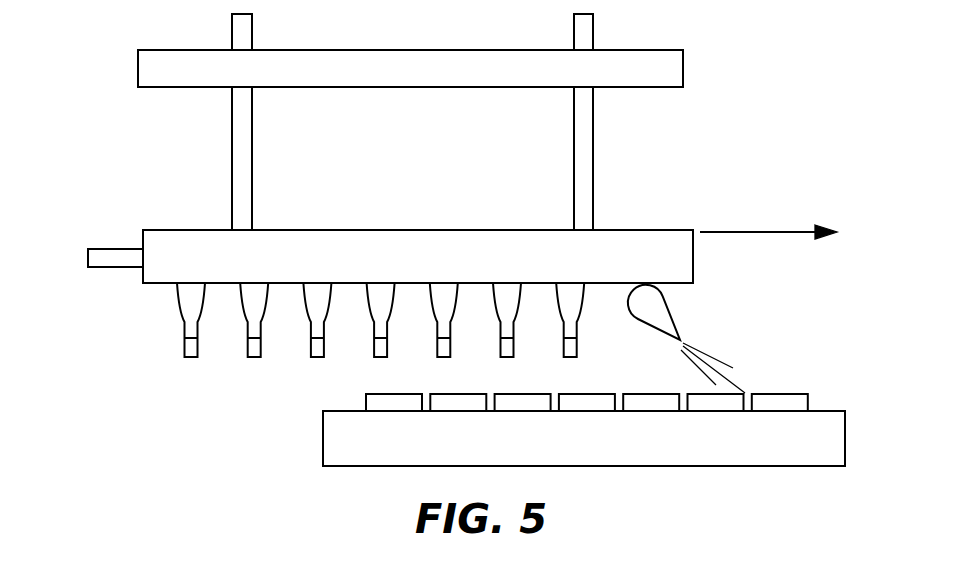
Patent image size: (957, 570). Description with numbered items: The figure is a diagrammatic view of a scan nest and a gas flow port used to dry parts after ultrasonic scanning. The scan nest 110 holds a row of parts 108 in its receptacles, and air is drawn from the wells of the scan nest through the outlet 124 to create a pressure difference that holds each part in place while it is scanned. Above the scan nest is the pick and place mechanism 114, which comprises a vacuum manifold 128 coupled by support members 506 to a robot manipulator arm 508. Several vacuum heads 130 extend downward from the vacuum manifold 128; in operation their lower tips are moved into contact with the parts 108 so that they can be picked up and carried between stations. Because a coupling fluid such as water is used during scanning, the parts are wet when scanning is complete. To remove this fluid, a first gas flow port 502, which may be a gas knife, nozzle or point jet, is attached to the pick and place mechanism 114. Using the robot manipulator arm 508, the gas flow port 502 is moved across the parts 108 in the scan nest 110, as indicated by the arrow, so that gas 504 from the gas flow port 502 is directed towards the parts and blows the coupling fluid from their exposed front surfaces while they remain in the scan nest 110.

The robot manipulator arm 508 is at (462, 50).
The support members 506 is at (232, 160).
The vacuum manifold 128 is at (400, 230).
The outlet 124 is at (122, 249).
The vacuum heads 130 is at (180, 312).
The first gas flow port 502 is at (667, 308).
The gas 504 is at (710, 352).
The parts 108 is at (366, 405).
The scan nest 110 is at (323, 443).
The pick and place mechanism 114 is at (782, 126).